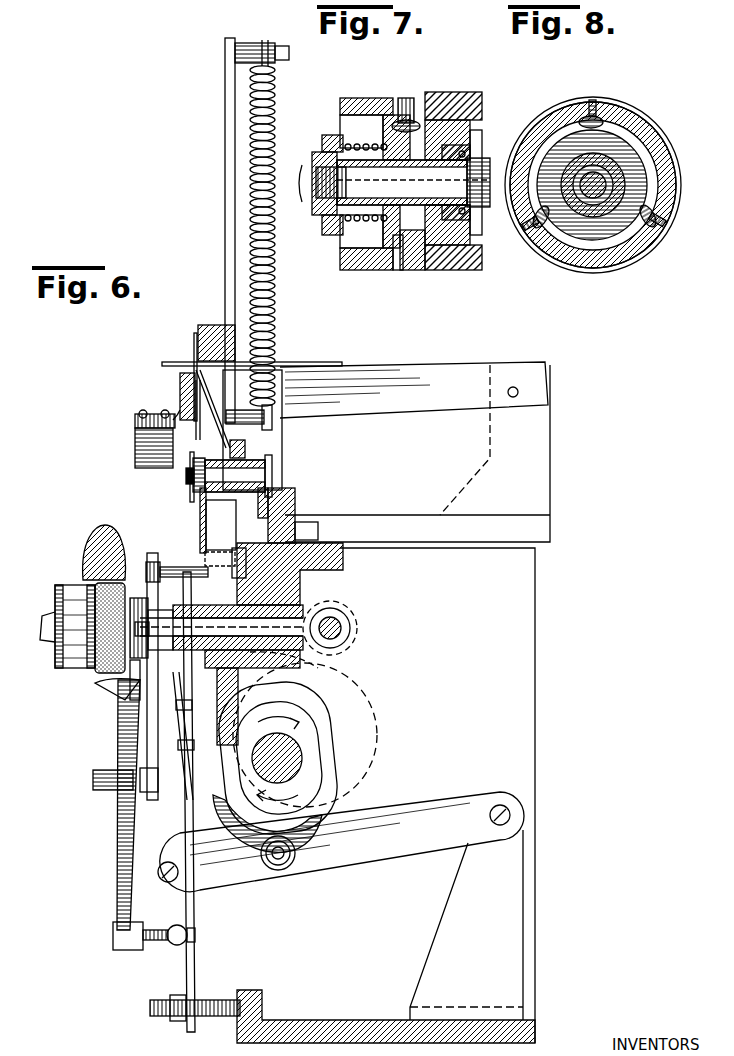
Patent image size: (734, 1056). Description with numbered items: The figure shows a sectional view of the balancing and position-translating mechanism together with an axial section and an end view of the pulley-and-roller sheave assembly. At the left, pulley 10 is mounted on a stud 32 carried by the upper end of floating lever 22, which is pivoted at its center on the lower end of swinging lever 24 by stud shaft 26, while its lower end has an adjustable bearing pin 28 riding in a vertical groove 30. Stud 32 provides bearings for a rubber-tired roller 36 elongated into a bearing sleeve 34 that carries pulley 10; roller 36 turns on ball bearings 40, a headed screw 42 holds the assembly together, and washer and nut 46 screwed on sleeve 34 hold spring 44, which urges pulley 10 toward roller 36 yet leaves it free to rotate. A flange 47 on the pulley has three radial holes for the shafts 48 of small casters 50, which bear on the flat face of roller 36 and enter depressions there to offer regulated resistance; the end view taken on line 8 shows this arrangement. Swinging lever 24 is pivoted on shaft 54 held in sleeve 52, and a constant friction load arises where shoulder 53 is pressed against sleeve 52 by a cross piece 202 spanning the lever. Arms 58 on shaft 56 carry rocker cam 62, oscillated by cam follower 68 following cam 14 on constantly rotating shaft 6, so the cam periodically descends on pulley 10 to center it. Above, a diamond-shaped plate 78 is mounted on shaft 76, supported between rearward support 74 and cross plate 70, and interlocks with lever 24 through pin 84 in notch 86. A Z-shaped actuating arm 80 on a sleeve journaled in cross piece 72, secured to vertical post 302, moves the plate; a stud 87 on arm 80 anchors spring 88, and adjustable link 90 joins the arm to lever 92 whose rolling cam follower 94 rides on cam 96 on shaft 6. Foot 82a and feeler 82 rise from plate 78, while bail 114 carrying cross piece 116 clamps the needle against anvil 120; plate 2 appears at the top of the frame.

In FIG. 6, the plate 2 is at (316, 362).
In FIG. 6, the cycling shaft 6 is at (295, 752).
In FIG. 7, the section line 8 is at (398, 79).
In FIG. 7, the pulley 10 is at (360, 262).
In FIG. 6, the pulley 10 is at (66, 592).
In FIG. 6, the cam 14 is at (368, 710).
In FIG. 6, the floating lever 22 is at (118, 834).
In FIG. 6, the swinging lever 24 is at (152, 720).
In FIG. 6, the stud shaft 26 is at (93, 782).
In FIG. 6, the adjustable bearing pin 28 is at (168, 944).
In FIG. 6, the vertical groove 30 is at (195, 912).
In FIG. 7, the stud 32 is at (480, 195).
In FIG. 8, the stud 32 is at (597, 195).
In FIG. 7, the bearing sleeve 34 is at (368, 138).
In FIG. 8, the bearing sleeve 34 is at (612, 172).
In FIG. 7, the rubber-tired roller 36 is at (454, 86).
In FIG. 8, the rubber-tired roller 36 is at (645, 122).
In FIG. 7, the ball bearings 40 is at (468, 155).
In FIG. 7, the headed screw 42 is at (312, 180).
In FIG. 7, the spring 44 is at (358, 222).
In FIG. 7, the washer and nut 46 is at (332, 138).
In FIG. 7, the flange 47 is at (408, 262).
In FIG. 8, the flange 47 is at (668, 172).
In FIG. 8, the shafts 48 is at (588, 105).
In FIG. 7, the casters 50 is at (404, 112).
In FIG. 8, the casters 50 is at (582, 120).
In FIG. 6, the sleeve 52 is at (290, 660).
In FIG. 6, the shoulder 53 is at (160, 616).
In FIG. 6, the shaft 54 is at (304, 612).
In FIG. 6, the shaft 56 is at (342, 628).
In FIG. 6, the arm 58 is at (350, 612).
In FIG. 6, the rocker cam 62 is at (110, 700).
In FIG. 6, the cam follower 68 is at (192, 760).
In FIG. 6, the cross plate 70 is at (190, 497).
In FIG. 6, the cross piece 72 is at (240, 448).
In FIG. 6, the rearward support 74 is at (268, 478).
In FIG. 6, the shaft 76 is at (188, 478).
In FIG. 6, the diamond shaped plate 78 is at (200, 522).
In FIG. 6, the actuating arm 80 is at (224, 452).
In FIG. 6, the feeler 82 is at (192, 350).
In FIG. 6, the foot 82a is at (250, 572).
In FIG. 6, the pin 84 is at (172, 566).
In FIG. 6, the elongated vertical notch 86 is at (210, 572).
In FIG. 6, the stud 87 is at (270, 422).
In FIG. 6, the spring 88 is at (276, 294).
In FIG. 6, the adjustable link 90 is at (168, 846).
In FIG. 6, the lever 92 is at (384, 848).
In FIG. 6, the rolling cam follower 94 is at (286, 870).
In FIG. 6, the cam 96 is at (218, 803).
In FIG. 6, the bail 114 is at (390, 400).
In FIG. 6, the cross piece 116 is at (182, 377).
In FIG. 6, the anvil 120 is at (208, 326).
In FIG. 6, the cross piece 202 is at (148, 640).
In FIG. 6, the vertical post 302 is at (286, 462).